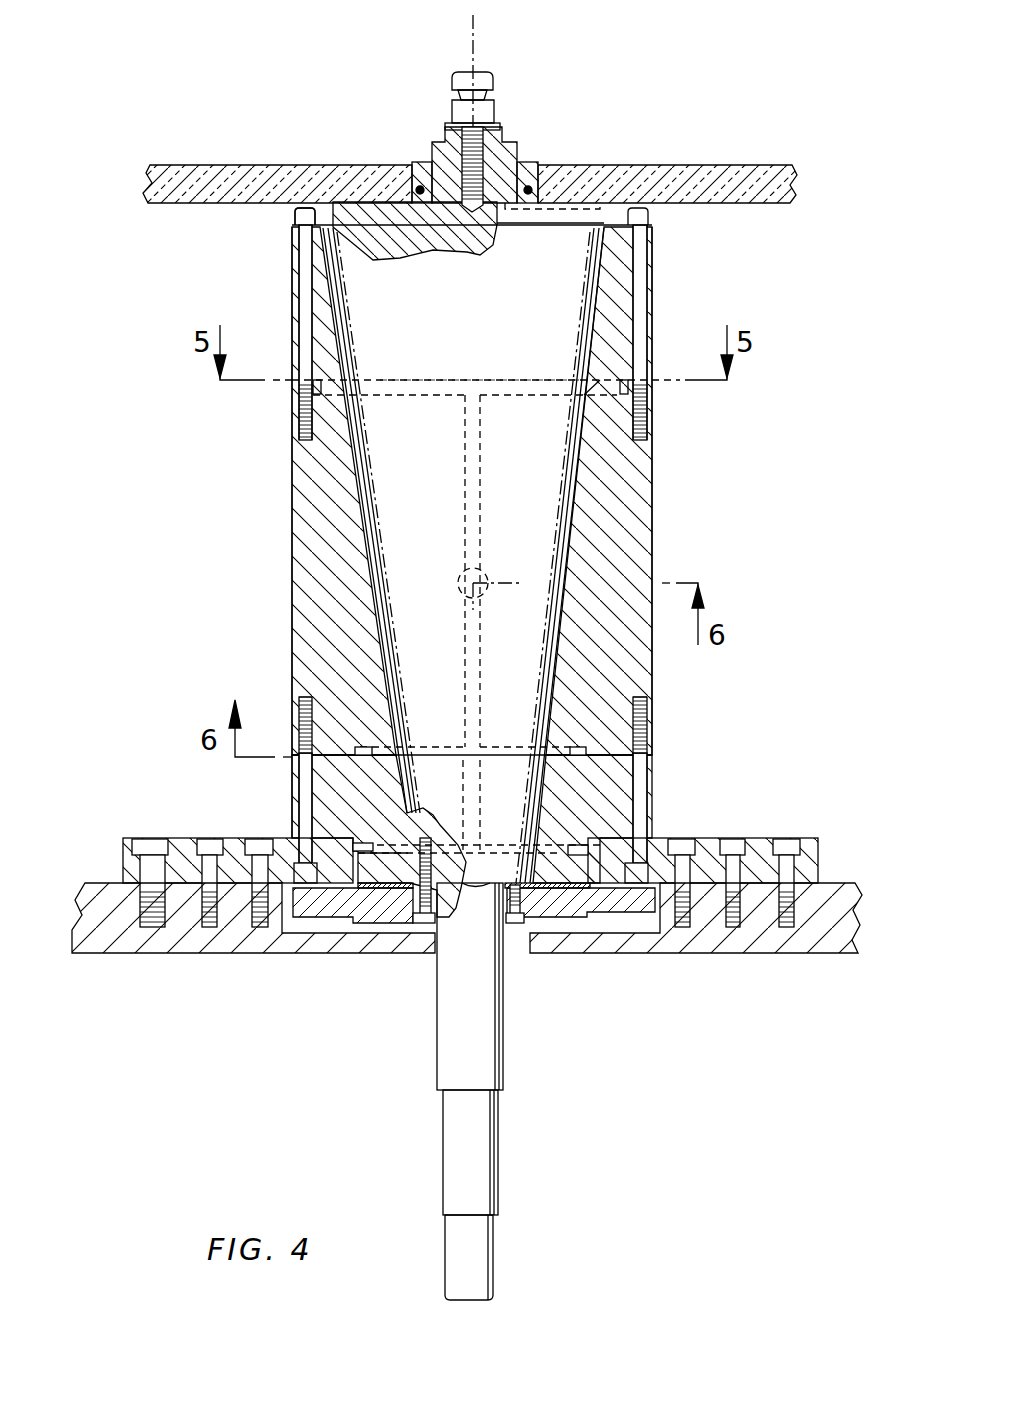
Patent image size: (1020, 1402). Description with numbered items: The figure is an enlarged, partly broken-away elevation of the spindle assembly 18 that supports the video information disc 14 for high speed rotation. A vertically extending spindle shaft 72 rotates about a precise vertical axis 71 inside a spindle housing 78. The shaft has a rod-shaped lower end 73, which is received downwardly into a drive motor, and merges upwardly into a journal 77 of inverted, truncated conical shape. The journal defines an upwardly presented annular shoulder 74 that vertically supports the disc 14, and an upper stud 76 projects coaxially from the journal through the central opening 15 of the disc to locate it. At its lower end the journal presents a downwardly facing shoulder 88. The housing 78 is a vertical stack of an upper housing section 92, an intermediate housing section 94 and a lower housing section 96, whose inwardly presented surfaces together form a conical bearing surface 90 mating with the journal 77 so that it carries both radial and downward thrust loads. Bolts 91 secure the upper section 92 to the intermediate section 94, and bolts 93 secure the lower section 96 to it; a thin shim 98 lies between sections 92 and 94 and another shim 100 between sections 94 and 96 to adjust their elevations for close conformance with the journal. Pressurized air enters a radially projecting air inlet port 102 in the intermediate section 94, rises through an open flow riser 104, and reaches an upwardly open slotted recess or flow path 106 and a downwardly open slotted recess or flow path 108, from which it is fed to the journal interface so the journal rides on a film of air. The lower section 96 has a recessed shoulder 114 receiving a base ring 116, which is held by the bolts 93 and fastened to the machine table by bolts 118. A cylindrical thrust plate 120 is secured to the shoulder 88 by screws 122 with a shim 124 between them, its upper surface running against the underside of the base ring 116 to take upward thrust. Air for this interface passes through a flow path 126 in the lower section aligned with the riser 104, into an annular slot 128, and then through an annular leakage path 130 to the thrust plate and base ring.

The video information disc 14 is at (310, 168).
The central opening 15 is at (533, 165).
The spindle assembly 18 is at (562, 391).
The vertical axis 71 is at (478, 53).
The spindle shaft 72 is at (392, 529).
The lower end 73 is at (497, 1072).
The annular shoulder 74 is at (602, 203).
The upper stud 76 is at (497, 105).
The journal 77 is at (375, 493).
The spindle housing 78 is at (288, 596).
The shoulder 88 is at (490, 878).
The bearing surface 90 is at (600, 322).
The bolts 91 is at (297, 212).
The upper housing section 92 is at (628, 280).
The bolts 93 is at (302, 768).
The intermediate housing section 94 is at (648, 497).
The lower housing section 96 is at (623, 788).
The shim 98 is at (598, 392).
The shim 100 is at (648, 710).
The air inlet port 102 is at (482, 553).
The flow riser 104 is at (480, 478).
The flow path 106 is at (313, 407).
The flow path 108 is at (358, 747).
The recessed shoulder 114 is at (617, 840).
The base ring 116 is at (753, 858).
The bolts 118 is at (157, 823).
The thrust plate 120 is at (613, 905).
The screws 122 is at (427, 925).
The shim 124 is at (375, 917).
The flow path 126 is at (475, 803).
The annular slot 128 is at (365, 845).
The leakage path 130 is at (595, 885).